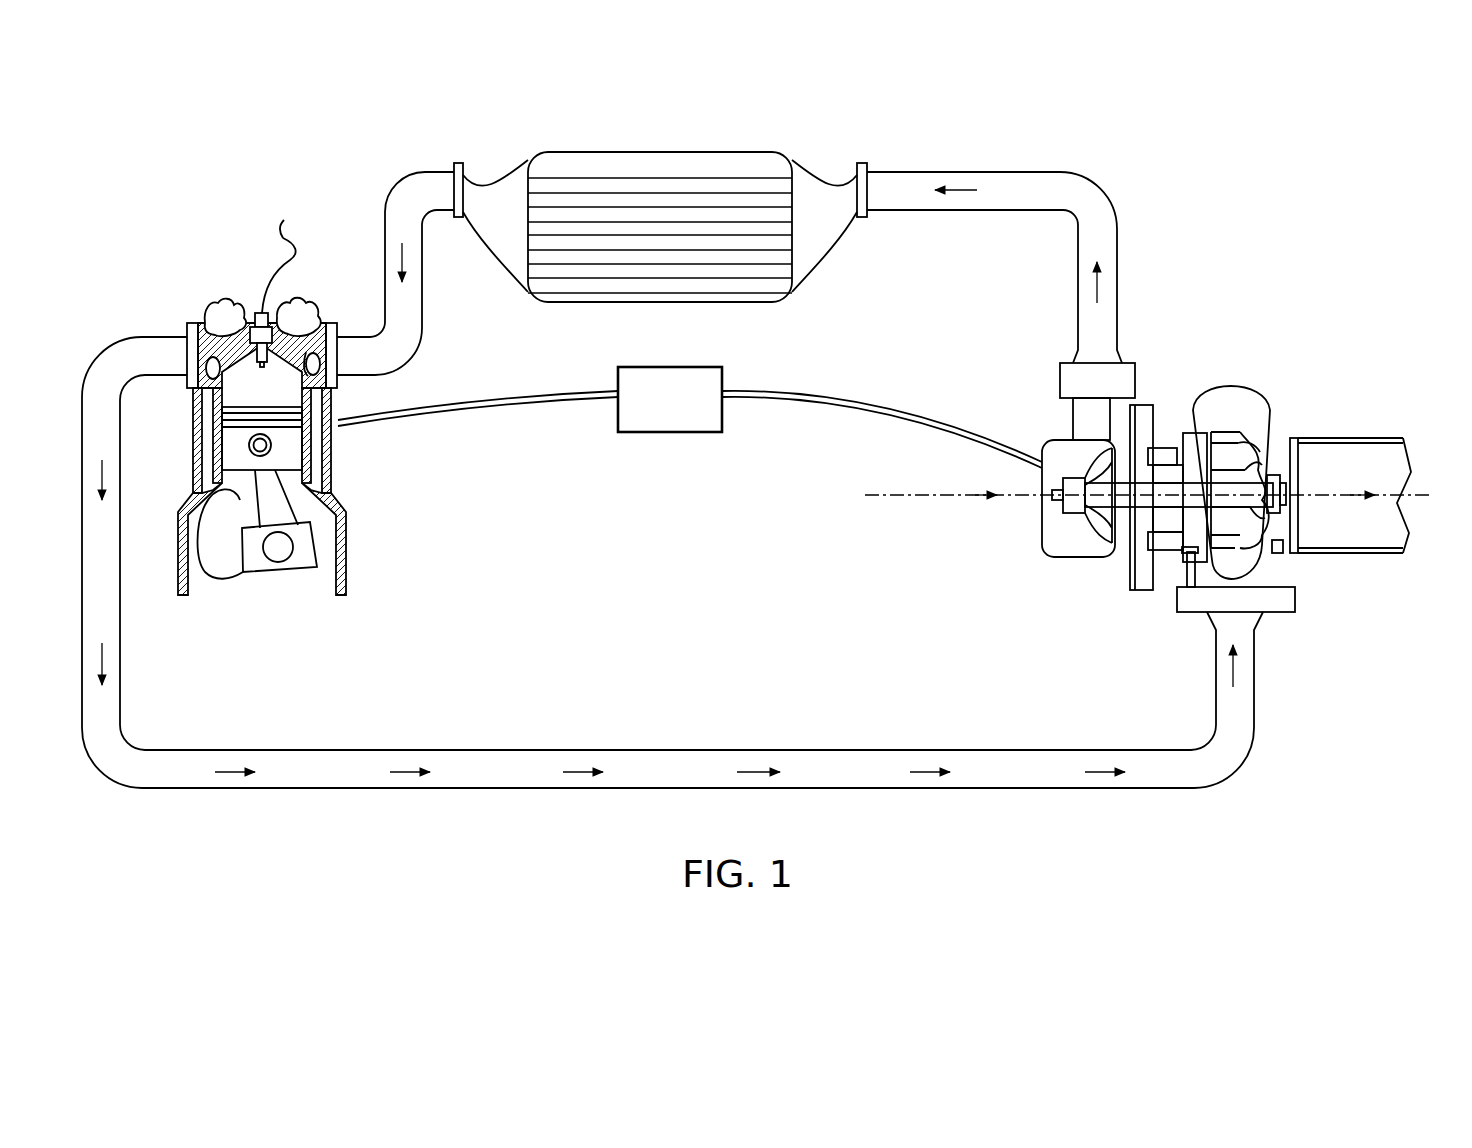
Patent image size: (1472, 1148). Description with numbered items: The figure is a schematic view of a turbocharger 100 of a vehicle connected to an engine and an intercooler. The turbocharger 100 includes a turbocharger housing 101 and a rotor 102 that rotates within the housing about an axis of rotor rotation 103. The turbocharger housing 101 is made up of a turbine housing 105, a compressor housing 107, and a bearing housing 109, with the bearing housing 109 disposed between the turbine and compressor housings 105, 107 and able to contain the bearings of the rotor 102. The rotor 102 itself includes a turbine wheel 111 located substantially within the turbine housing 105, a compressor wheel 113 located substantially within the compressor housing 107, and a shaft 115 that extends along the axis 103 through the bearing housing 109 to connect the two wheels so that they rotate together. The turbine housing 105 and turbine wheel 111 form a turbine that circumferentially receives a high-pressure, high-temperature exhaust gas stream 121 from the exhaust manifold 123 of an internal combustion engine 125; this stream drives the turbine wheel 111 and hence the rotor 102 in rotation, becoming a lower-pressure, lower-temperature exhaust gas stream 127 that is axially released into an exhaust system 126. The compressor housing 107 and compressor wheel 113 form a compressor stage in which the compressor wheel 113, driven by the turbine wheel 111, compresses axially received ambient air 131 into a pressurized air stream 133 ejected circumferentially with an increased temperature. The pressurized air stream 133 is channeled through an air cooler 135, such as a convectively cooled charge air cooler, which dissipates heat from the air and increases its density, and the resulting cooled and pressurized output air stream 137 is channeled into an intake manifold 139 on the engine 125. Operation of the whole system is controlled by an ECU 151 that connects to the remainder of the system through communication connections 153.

The turbocharger 100 is at (1240, 312).
The turbocharger housing 101 is at (1150, 392).
The rotor 102 is at (1140, 505).
The axis of rotor rotation 103 is at (1413, 497).
The turbine housing 105 is at (1237, 402).
The compressor housing 107 is at (1045, 442).
The bearing housing 109 is at (1160, 447).
The turbine wheel 111 is at (1220, 480).
The compressor wheel 113 is at (1092, 520).
The shaft 115 is at (1177, 497).
The exhaust gas stream 121 is at (755, 765).
The exhaust manifold 123 is at (213, 328).
The internal combustion engine 125 is at (292, 458).
The exhaust system 126 is at (1357, 435).
The lower-pressure and lower-temperature exhaust gas stream 127 is at (1333, 493).
The ambient air 131 is at (888, 500).
The pressurized air stream 133 is at (958, 190).
The air cooler 135 is at (658, 172).
The cooled and pressurized output air stream 137 is at (400, 262).
The intake manifold 139 is at (330, 370).
The ECU 151 is at (668, 433).
The communication connections 153 is at (813, 408).